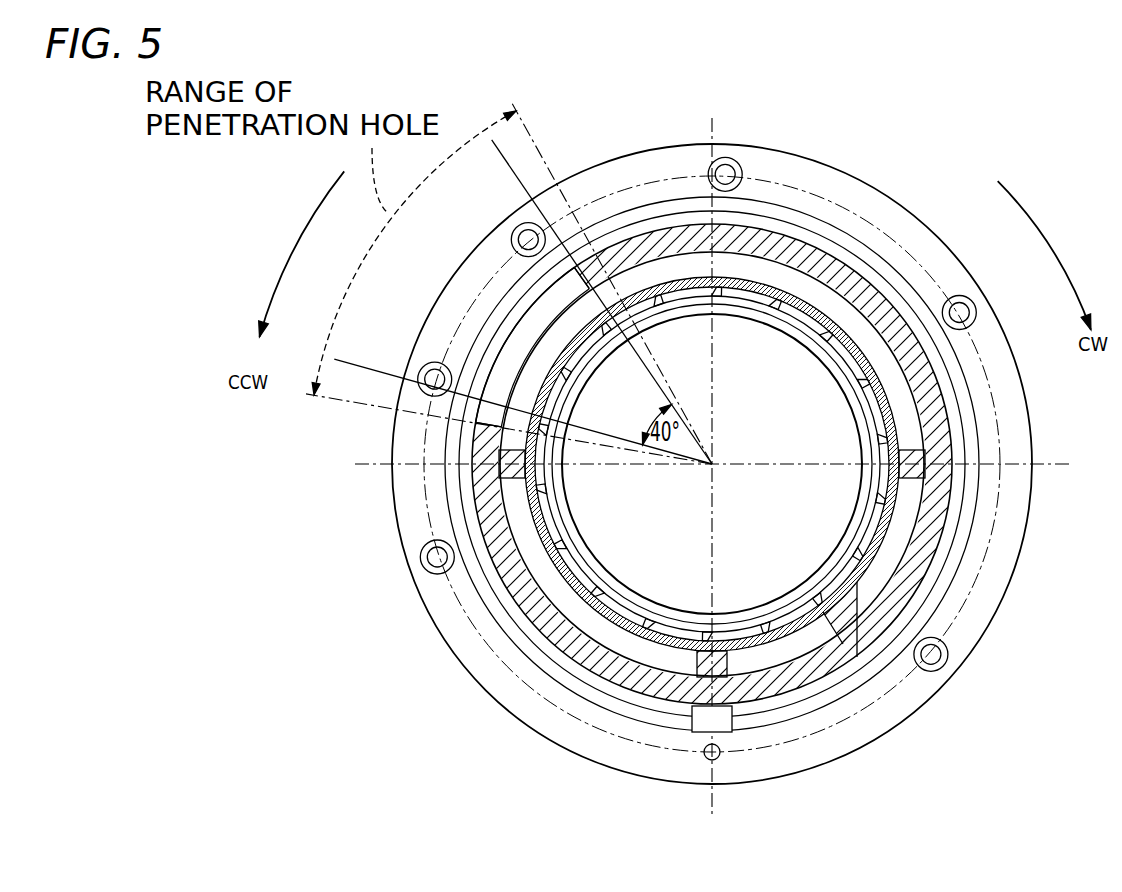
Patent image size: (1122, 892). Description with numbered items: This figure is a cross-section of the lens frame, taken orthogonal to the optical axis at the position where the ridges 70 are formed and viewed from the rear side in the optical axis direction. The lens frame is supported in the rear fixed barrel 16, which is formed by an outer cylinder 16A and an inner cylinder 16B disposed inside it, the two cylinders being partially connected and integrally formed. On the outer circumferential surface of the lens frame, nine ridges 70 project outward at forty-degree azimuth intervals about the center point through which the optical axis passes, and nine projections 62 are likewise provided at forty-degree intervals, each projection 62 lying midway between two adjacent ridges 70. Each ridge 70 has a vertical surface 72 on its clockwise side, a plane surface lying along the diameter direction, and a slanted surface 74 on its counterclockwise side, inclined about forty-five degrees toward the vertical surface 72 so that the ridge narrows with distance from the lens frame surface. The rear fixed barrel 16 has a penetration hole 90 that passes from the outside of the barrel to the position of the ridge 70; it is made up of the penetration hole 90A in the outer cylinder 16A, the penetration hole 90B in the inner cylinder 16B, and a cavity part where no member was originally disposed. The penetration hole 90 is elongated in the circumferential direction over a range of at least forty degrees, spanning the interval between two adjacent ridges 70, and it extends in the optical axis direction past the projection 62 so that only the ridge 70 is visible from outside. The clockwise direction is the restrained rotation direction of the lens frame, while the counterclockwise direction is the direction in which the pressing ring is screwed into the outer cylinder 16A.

The rear fixed barrel 16 is at (957, 137).
The outer cylinder 16A is at (803, 297).
The inner cylinder 16B is at (860, 350).
The projection 62 is at (662, 270).
The ridge 70 is at (550, 428).
The vertical surface 72 is at (628, 280).
The slanted surface 74 is at (582, 325).
The penetration hole 90 is at (497, 310).
The penetration hole 90A is at (513, 358).
The penetration hole 90B is at (517, 337).